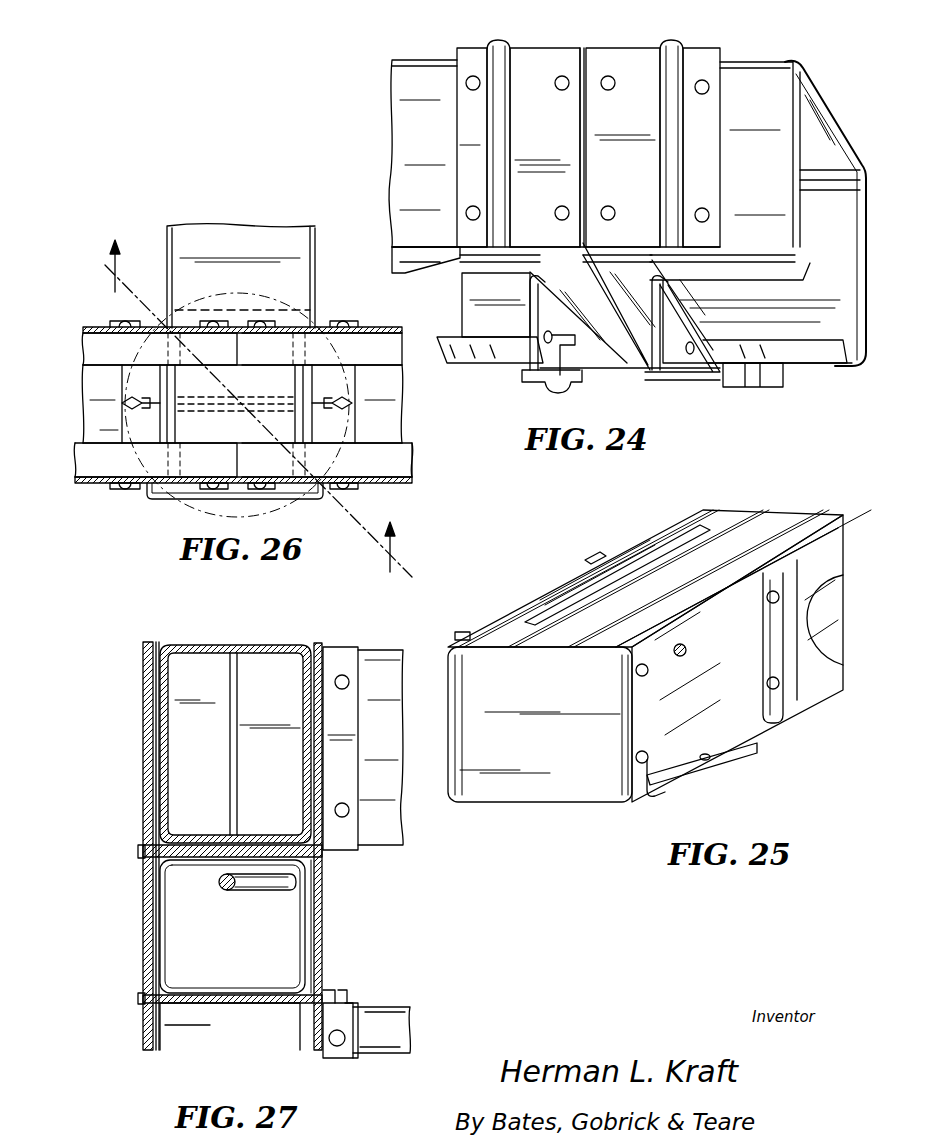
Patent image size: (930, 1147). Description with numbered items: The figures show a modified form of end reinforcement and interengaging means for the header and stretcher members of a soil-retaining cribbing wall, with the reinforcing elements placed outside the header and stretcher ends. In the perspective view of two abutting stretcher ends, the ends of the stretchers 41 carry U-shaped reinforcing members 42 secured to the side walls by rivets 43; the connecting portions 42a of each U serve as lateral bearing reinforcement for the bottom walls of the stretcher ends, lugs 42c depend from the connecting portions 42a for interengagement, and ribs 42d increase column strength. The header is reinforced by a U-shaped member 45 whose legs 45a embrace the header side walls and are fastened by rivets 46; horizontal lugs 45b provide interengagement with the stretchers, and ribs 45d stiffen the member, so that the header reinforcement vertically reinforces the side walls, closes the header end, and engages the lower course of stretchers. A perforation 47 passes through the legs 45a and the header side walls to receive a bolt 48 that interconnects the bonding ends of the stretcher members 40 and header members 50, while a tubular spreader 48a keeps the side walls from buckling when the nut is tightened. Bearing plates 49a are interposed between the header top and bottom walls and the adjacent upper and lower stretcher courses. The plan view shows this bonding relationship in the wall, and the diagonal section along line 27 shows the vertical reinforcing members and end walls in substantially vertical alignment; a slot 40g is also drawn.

In FIG. 26, the stretcher member 40 is at (117, 320).
In FIG. 27, the stretcher member 40 is at (193, 642).
In FIG. 24, the stretcher 41 is at (410, 70).
In FIG. 24, the U-shaped reinforcing member 42 is at (551, 60).
In FIG. 26, the U-shaped reinforcing member 42 is at (193, 323).
In FIG. 27, the U-shaped reinforcing member 42 is at (145, 740).
In FIG. 24, the connecting portion 42a is at (613, 352).
In FIG. 27, the connecting portion 42a is at (183, 840).
In FIG. 24, the lug 42c is at (528, 366).
In FIG. 27, the lug 42c is at (310, 925).
In FIG. 24, the rib 42d is at (508, 36).
In FIG. 24, the rivet 43 is at (473, 78).
In FIG. 26, the U-shaped member 45 is at (200, 497).
In FIG. 25, the U-shaped member 45 is at (583, 790).
In FIG. 27, the U-shaped member 45 is at (322, 905).
In FIG. 25, the leg 45a is at (510, 610).
In FIG. 27, the leg 45a is at (362, 650).
In FIG. 25, the horizontal lug 45b is at (703, 773).
In FIG. 25, the rib 45d is at (603, 543).
In FIG. 25, the rivet 46 is at (647, 764).
In FIG. 25, the perforation 47 is at (677, 657).
In FIG. 26, the bolt 48 is at (236, 388).
In FIG. 27, the bolt 48 is at (230, 890).
In FIG. 27, the tubular spreader 48a is at (277, 891).
In FIG. 27, the bearing plate 49a is at (143, 850).
In FIG. 26, the header member 50 is at (317, 283).
In FIG. 27, the header member 50 is at (163, 917).
In FIG. 25, the slot 40g is at (560, 577).
In FIG. 26, the section line 27- 27 is at (260, 400).